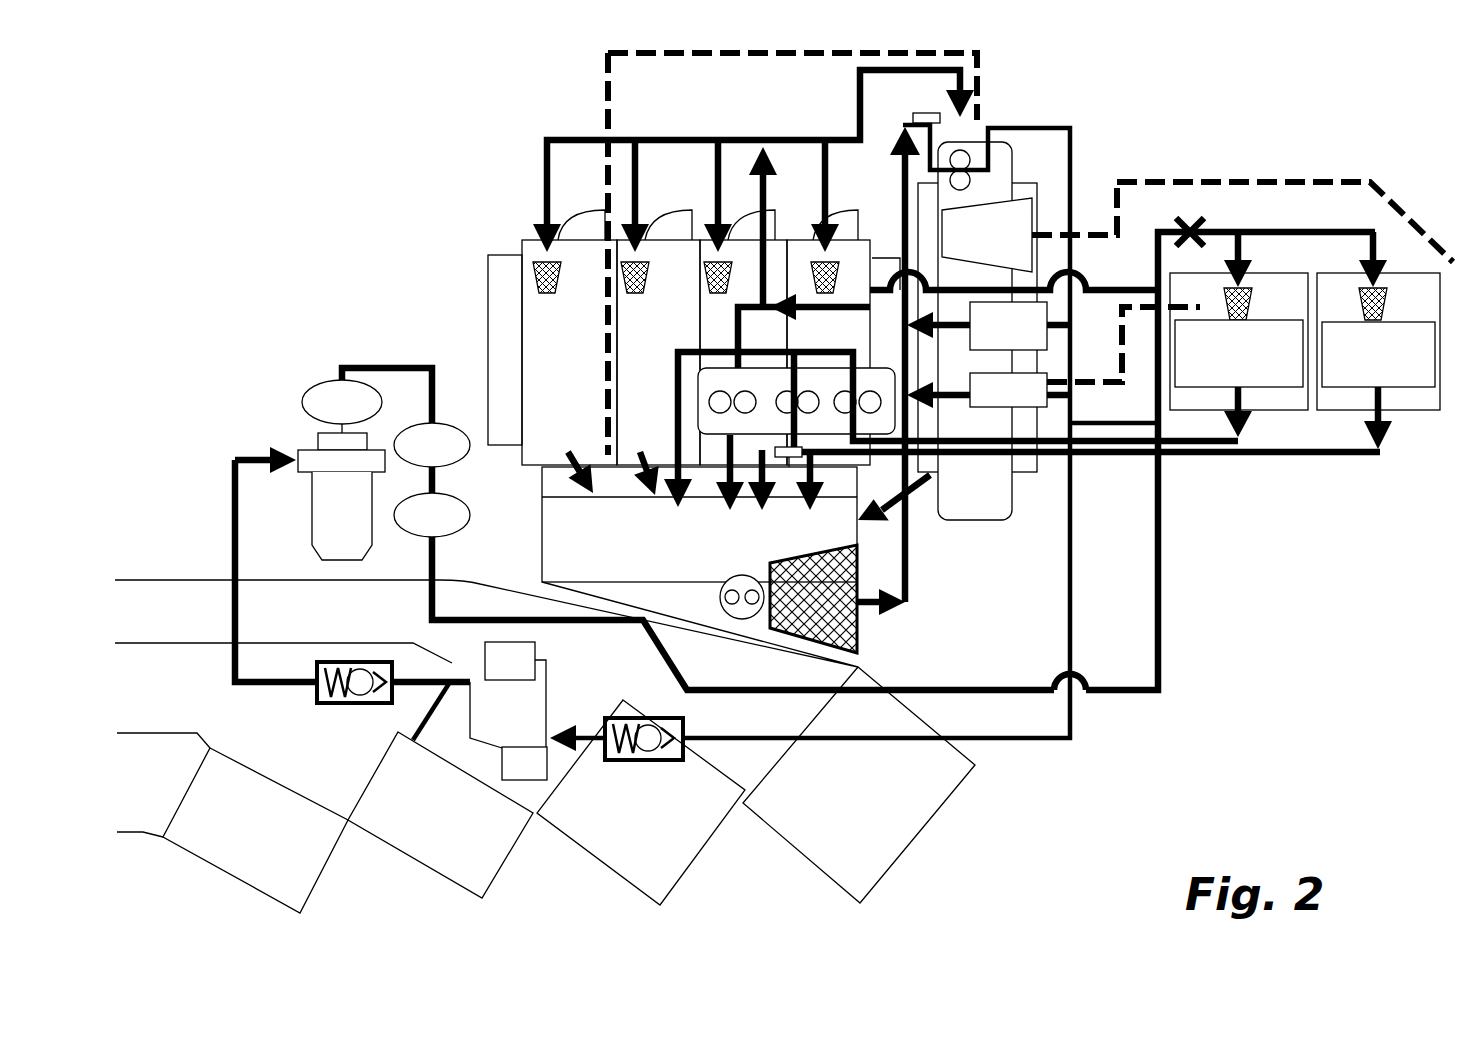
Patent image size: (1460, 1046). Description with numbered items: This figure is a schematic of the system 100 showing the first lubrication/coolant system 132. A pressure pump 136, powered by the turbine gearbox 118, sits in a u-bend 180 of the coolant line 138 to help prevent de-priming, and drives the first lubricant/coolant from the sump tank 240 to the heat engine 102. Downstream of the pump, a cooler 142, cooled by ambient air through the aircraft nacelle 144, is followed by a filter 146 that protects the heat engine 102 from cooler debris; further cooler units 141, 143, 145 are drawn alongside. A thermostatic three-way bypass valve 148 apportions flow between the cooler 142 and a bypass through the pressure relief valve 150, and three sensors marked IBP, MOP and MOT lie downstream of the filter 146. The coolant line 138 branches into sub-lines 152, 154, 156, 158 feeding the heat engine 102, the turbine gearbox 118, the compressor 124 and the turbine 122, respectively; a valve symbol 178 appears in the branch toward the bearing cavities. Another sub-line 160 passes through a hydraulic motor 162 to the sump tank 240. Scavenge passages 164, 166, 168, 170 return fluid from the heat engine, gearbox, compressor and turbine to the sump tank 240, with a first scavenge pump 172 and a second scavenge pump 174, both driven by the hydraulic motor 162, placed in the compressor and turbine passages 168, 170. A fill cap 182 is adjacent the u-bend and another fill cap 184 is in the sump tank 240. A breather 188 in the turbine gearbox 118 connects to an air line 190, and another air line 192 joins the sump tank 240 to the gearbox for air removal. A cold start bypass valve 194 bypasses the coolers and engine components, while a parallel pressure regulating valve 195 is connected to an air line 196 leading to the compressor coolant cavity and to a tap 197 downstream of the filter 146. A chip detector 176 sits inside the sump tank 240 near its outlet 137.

The gas turbine engine lubrication system 100 is at (237, 99).
The first lubrication/coolant system 132 is at (766, 463).
The heat engine 102 is at (527, 250).
The turbine gearbox 118 is at (985, 510).
The turbine 122 is at (1397, 398).
The compressor 124 is at (1265, 393).
The pressure pump 136 is at (968, 152).
The outlet of the sump tank 137 is at (872, 618).
The coolant line 138 is at (1072, 145).
The type 2 oil cooler 141 is at (313, 867).
The cooler 142 is at (500, 850).
The heat exchanger 143 is at (690, 838).
The aircraft nacelle 144 is at (117, 618).
The heat exchanger 145 is at (907, 830).
The filter 146 is at (312, 532).
The three way bypass valve 148 is at (530, 745).
The pressure relief valve 150 is at (493, 682).
The coolant sub-line 152 is at (692, 140).
The coolant sub-line 154 is at (887, 67).
The coolant sub-line 156 is at (1243, 247).
The coolant sub-line 158 is at (1260, 232).
The coolant sub-line 160 is at (737, 312).
The hydraulic motor 162 is at (697, 403).
The scavenge passage 164 is at (552, 477).
The scavenge passage 166 is at (920, 478).
The scavenge passage 168 is at (1077, 456).
The scavenge passage 170 is at (1177, 458).
The first scavenge pump 172 is at (878, 458).
The second scavenge pump 174 is at (803, 390).
The chip detector 176 is at (740, 574).
The shutoff valve 178 is at (1196, 222).
The u-bend 180 is at (1040, 205).
The fill cap 182 is at (933, 110).
The fill cap 184 is at (793, 467).
The breather 188 is at (1035, 220).
The air line 190 is at (1302, 182).
The air line 192 is at (645, 53).
The cold start bypass valve 194 is at (968, 335).
The pressure regulating valve 195 is at (985, 407).
The air line 196 is at (1117, 360).
The tap 197 is at (1103, 426).
The sump tank 240 is at (560, 537).